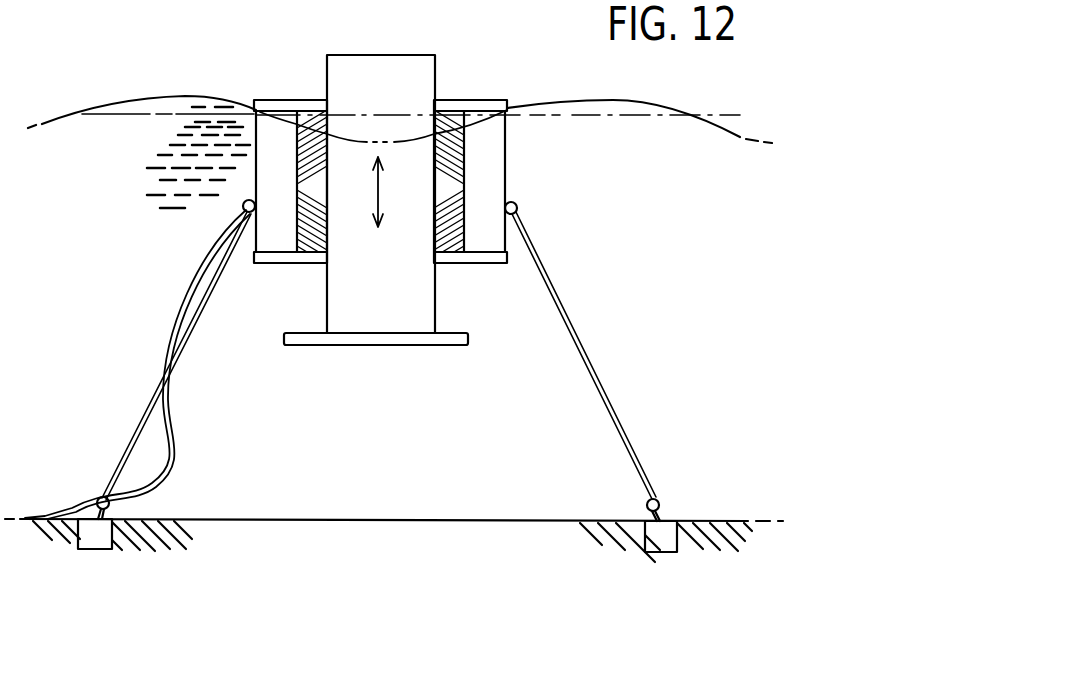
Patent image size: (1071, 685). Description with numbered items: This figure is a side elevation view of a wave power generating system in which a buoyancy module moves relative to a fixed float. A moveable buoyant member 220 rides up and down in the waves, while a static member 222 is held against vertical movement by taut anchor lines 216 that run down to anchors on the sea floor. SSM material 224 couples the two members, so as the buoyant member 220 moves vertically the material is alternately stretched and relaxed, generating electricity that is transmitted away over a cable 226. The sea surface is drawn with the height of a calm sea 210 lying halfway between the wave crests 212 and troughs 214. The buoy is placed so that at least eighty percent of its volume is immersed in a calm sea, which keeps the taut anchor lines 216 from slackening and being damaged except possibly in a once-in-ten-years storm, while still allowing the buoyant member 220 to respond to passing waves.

The height of a calm sea 210 is at (570, 117).
The crests 212 is at (182, 96).
The troughs 214 is at (398, 140).
The taut anchor lines 216 is at (183, 343).
The moveable buoyant member 220 is at (390, 55).
The static member 222 is at (505, 136).
The SSM material 224 is at (456, 203).
The cable 226 is at (82, 497).